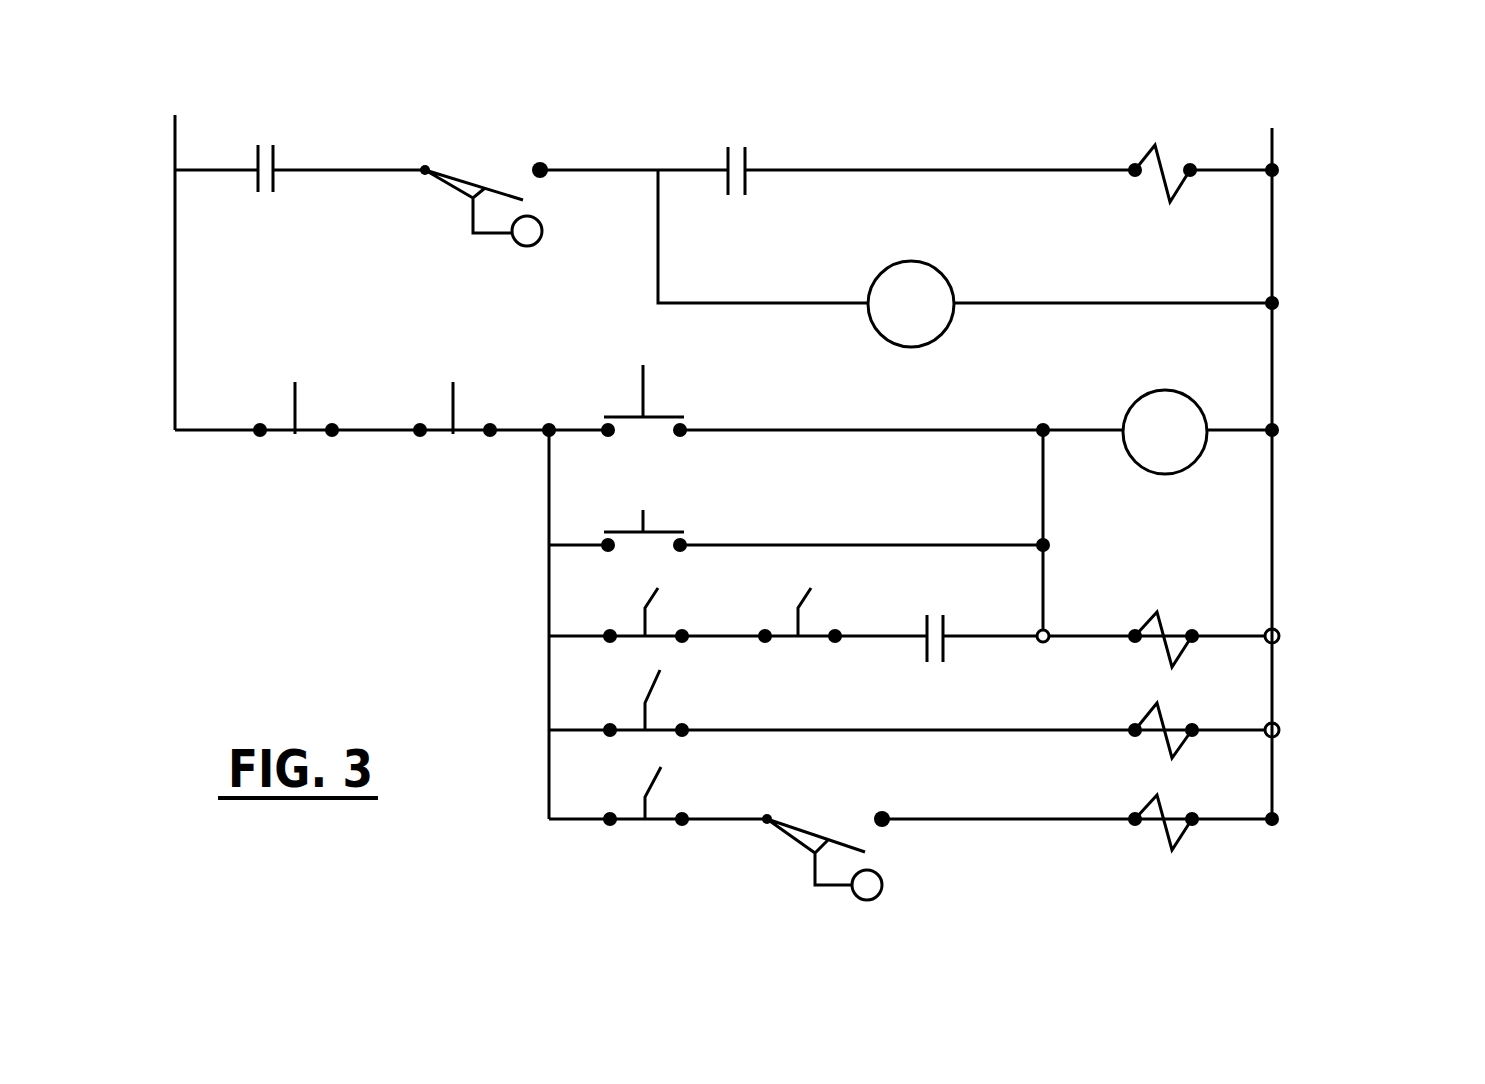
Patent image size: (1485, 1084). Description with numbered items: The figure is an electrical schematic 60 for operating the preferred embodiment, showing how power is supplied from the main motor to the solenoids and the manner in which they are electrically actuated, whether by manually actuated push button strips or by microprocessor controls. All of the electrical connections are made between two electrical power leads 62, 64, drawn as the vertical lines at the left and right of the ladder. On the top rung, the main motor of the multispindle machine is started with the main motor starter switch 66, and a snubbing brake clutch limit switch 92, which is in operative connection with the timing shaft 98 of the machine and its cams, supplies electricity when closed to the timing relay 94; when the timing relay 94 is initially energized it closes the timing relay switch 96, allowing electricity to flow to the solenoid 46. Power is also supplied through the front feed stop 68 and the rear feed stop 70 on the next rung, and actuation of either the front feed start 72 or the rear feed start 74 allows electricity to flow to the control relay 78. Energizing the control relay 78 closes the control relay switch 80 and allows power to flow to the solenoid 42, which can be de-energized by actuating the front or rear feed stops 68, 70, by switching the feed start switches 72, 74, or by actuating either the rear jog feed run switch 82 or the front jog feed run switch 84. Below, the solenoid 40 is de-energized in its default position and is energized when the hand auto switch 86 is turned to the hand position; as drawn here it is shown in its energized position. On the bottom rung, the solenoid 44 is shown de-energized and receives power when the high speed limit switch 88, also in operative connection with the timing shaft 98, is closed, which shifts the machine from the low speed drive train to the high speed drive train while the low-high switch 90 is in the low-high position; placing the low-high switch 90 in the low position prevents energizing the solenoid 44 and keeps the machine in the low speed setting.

The electrical schematic 60 is at (917, 104).
The electrical power lead 62 is at (175, 287).
The electrical power lead 64 is at (1272, 495).
The main motor starter switch 66 is at (272, 73).
The snubbing brake clutch limit switch 92 is at (508, 95).
The timing shaft 98 is at (523, 253).
The timing relay switch 96 is at (737, 110).
The timing relay 94 is at (908, 262).
The solenoid 46 is at (1160, 112).
The rear feed stop 70 is at (293, 313).
The front feed stop 68 is at (443, 313).
The front feed start 72 is at (685, 362).
The rear feed start 74 is at (682, 497).
The control relay 78 is at (1168, 392).
The rear jog feed run switch 82 is at (615, 600).
The front jog feed run switch 84 is at (758, 597).
The control relay switch 80 is at (948, 625).
The solenoid 42 is at (1130, 597).
The hand auto switch 86 is at (730, 673).
The solenoid 40 is at (1130, 693).
The low-high switch 90 is at (665, 760).
The high speed limit switch 88 is at (800, 775).
The solenoid 44 is at (1130, 780).